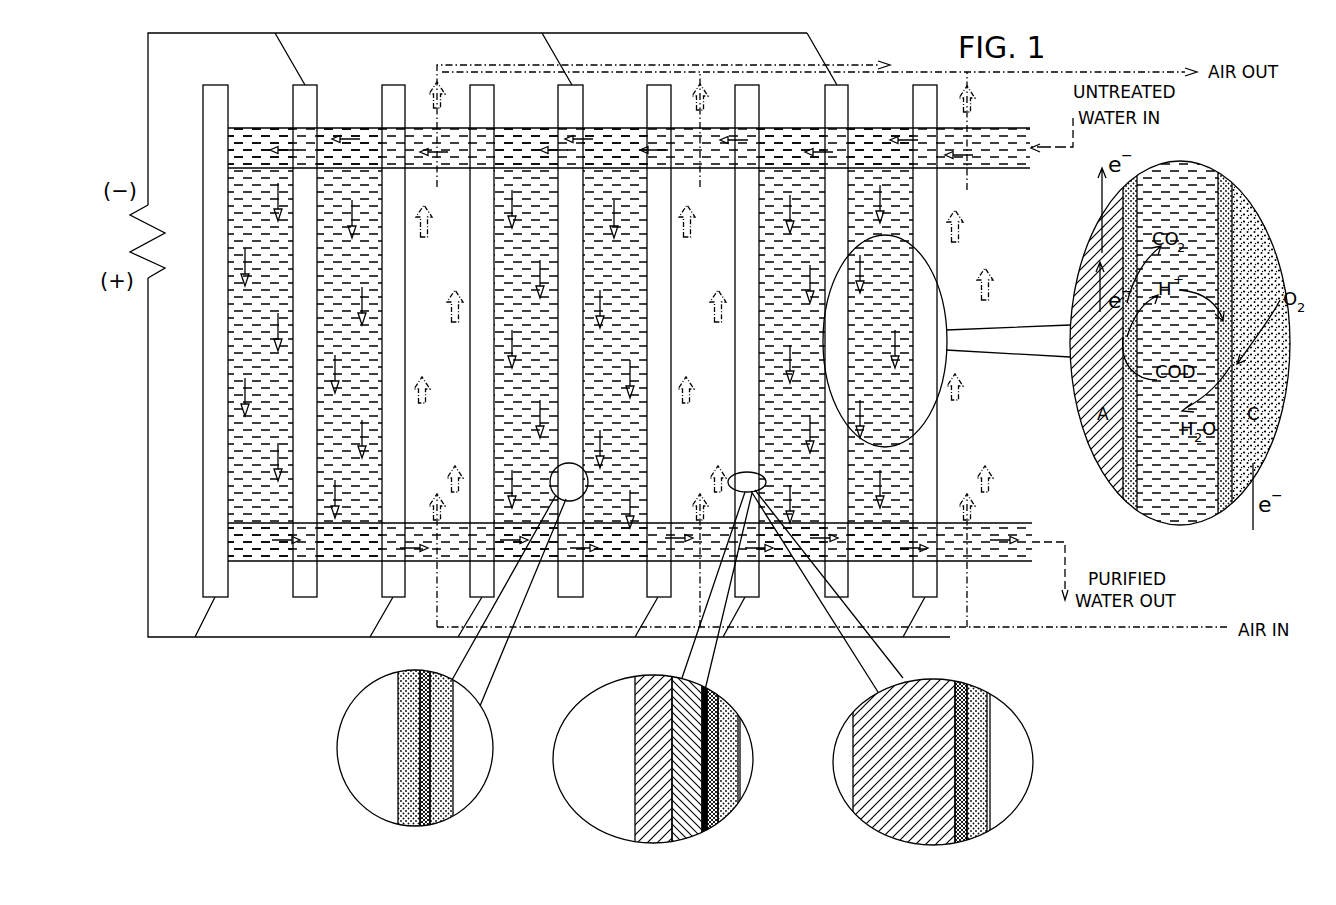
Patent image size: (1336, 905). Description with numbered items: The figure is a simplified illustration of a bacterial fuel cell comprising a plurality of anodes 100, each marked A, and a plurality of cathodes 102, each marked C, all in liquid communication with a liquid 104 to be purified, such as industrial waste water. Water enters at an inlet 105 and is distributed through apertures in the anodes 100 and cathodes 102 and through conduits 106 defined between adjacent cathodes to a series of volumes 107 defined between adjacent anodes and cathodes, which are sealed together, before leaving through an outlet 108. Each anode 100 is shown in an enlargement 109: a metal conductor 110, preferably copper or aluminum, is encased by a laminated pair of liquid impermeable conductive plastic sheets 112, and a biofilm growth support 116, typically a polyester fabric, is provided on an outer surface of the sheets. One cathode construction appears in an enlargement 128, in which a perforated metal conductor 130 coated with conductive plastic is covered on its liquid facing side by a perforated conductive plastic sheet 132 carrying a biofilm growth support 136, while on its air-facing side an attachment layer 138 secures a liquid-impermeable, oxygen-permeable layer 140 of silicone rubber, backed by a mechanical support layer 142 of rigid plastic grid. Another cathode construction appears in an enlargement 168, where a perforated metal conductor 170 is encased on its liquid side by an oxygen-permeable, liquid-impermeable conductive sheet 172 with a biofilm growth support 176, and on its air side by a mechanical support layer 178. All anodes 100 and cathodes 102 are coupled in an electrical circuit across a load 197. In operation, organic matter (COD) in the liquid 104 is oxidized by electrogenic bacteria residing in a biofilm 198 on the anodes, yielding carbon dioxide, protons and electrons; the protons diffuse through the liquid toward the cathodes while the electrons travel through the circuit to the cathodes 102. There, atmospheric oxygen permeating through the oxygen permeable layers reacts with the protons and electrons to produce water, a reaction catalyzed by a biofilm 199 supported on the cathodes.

The anode 100 is at (293, 105).
The cathode 102 is at (203, 101).
The liquid 104 is at (258, 331).
The inlet 105 is at (1000, 140).
The conduit 106 is at (687, 147).
The volume 107 is at (800, 230).
The outlet 108 is at (1008, 533).
The enlargement 109 is at (391, 744).
The metal conductor 110 is at (440, 790).
The liquid impermeable conductive plastic sheets 112 is at (420, 768).
The biofilm growth support 116 is at (398, 712).
The enlargement 128 is at (659, 754).
The perforated metal conductor 130 is at (717, 718).
The perforated sheet 132 is at (723, 740).
The biofilm growth support 136 is at (740, 760).
The attachment layer 138 is at (697, 805).
The oxygen-permeable layer 140 is at (687, 720).
The mechanical support layer 142 is at (647, 750).
The enlargement 168 is at (935, 760).
The perforated metal conductor 170 is at (957, 760).
The oxygen-permeable, liquid-impermeable sheet 172 is at (980, 747).
The biofilm growth support 176 is at (990, 722).
The mechanical support layer 178 is at (873, 818).
The load 197 is at (142, 243).
The biofilm 198 is at (1123, 218).
The biofilm 199 is at (1232, 205).